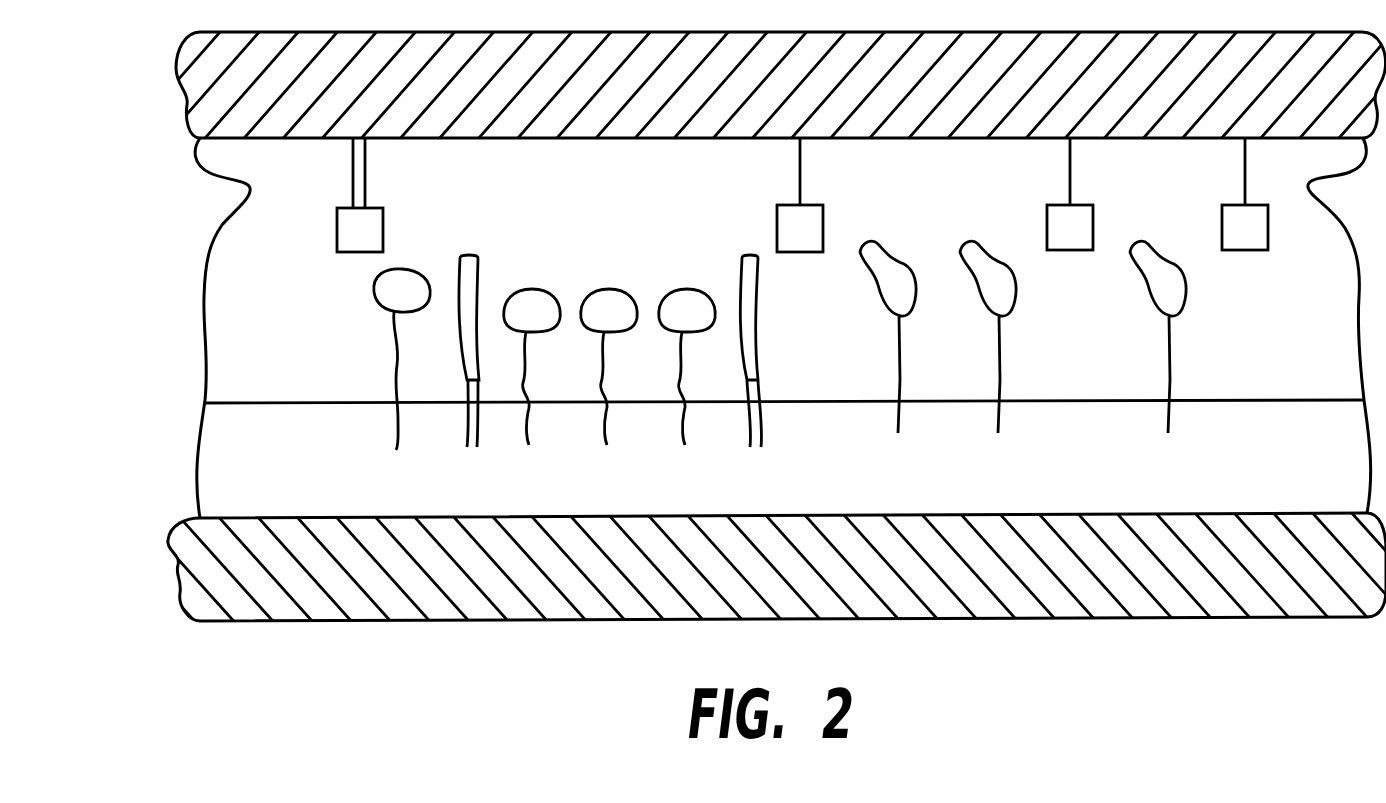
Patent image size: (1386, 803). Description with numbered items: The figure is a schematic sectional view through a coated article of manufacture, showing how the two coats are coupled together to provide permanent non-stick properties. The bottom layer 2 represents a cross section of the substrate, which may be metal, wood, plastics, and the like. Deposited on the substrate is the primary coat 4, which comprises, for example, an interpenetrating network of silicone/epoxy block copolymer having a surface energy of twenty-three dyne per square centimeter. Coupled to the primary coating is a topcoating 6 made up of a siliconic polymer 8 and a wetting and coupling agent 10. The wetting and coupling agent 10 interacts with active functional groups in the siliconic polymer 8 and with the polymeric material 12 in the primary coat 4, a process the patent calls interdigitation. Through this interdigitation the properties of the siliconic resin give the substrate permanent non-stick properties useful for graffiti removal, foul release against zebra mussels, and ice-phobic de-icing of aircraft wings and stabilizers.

The bottom layer 2 is at (190, 588).
The primary coat 4 is at (210, 430).
The topcoating 6 is at (187, 176).
The siliconic polymer 8 is at (200, 90).
The wetting and coupling agent 10 is at (337, 238).
The polymeric material 12 is at (375, 292).